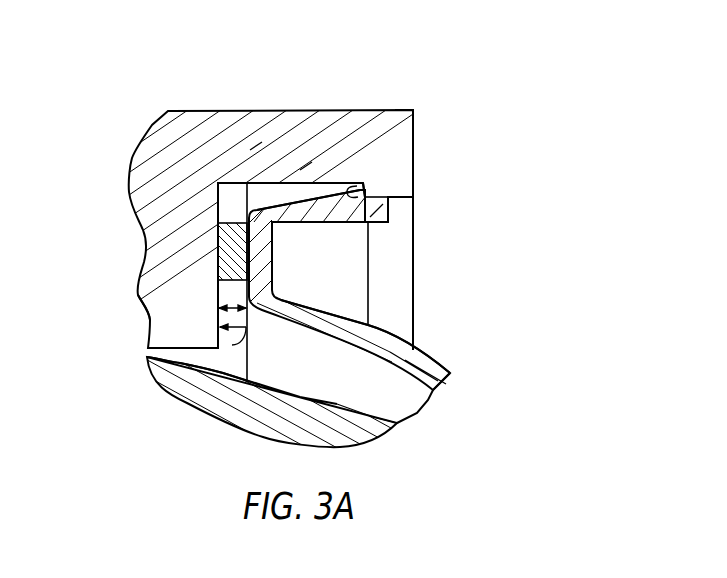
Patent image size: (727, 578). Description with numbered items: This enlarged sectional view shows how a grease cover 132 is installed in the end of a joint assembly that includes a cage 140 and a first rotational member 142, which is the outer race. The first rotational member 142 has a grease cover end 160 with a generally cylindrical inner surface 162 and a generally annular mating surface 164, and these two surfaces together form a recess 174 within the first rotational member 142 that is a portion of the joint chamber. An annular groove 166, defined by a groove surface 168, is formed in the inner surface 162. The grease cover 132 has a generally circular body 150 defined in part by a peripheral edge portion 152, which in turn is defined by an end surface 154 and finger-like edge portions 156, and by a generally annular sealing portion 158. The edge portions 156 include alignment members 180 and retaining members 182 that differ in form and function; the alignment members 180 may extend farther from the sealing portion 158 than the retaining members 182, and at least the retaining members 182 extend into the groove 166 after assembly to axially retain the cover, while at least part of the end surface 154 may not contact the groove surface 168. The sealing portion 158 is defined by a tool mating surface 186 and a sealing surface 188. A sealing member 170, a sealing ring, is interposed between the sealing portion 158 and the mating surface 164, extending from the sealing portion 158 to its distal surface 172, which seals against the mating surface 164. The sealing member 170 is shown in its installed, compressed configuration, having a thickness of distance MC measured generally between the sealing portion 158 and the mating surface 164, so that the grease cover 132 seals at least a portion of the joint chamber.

The first rotational member 142 is at (186, 126).
The annular groove 166 is at (272, 186).
The groove surface 168 is at (282, 196).
The sealing portion 158 is at (262, 238).
The peripheral edge portion 152 is at (333, 198).
The retaining members 182 is at (349, 191).
The alignment members 180 is at (376, 180).
The inner surface 162 is at (399, 203).
The end surface 154 is at (414, 110).
The grease cover end 160 is at (440, 133).
The edge portions 156 is at (369, 298).
The recess 174 is at (447, 231).
The tool mating surface 186 is at (285, 268).
The grease cover 132 is at (429, 340).
The body 150 is at (432, 360).
The cage 140 is at (343, 412).
The mating surface 164 is at (220, 368).
The sealing member 170 is at (238, 258).
The distal surface 172 is at (209, 230).
The sealing surface 188 is at (222, 308).
The distance MC is at (152, 336).